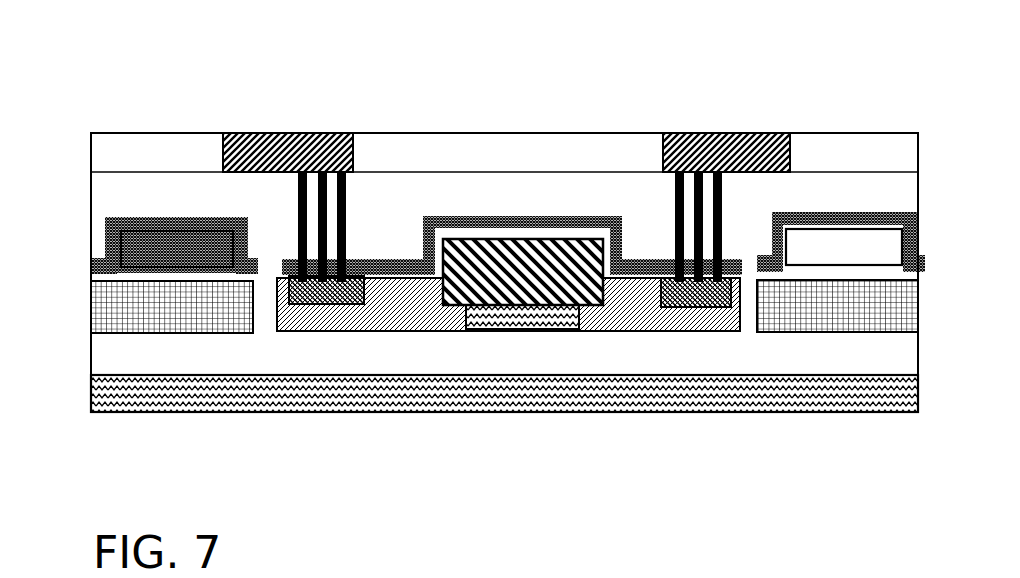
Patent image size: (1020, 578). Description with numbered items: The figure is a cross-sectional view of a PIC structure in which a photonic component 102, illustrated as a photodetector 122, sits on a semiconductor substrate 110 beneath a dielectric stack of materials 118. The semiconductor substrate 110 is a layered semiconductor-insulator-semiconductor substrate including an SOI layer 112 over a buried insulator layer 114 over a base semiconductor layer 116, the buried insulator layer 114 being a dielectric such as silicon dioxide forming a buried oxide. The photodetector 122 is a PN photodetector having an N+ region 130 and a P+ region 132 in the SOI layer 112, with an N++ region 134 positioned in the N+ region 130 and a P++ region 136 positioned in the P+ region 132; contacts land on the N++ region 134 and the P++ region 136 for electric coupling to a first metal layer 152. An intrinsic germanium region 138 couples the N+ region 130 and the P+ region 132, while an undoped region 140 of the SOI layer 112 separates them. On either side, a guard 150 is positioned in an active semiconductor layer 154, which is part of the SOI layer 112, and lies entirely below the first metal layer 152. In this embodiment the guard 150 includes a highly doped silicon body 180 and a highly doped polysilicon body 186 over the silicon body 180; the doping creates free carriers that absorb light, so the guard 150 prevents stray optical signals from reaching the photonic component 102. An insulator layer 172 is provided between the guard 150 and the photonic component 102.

The photonic component 102 is at (510, 155).
The photodetector 122 is at (303, 120).
The semiconductor substrate 110 is at (463, 374).
The SOI layer 112 is at (504, 388).
The buried insulator layer 114 is at (892, 363).
The base semiconductor layer 116 is at (128, 392).
The dielectric stack of materials 118 is at (82, 136).
The N+ region 130 is at (412, 310).
The P+ region 132 is at (630, 317).
The N++ region 134 is at (323, 283).
The P++ region 136 is at (707, 293).
The germanium region 138 is at (500, 272).
The undoped region 140 is at (537, 323).
The guard 150 is at (177, 222).
The first metal layer 152 is at (207, 157).
The active semiconductor layer 154 is at (843, 432).
The insulator layer 172 is at (270, 312).
The silicon body 180 is at (205, 293).
The polysilicon body 186 is at (145, 240).